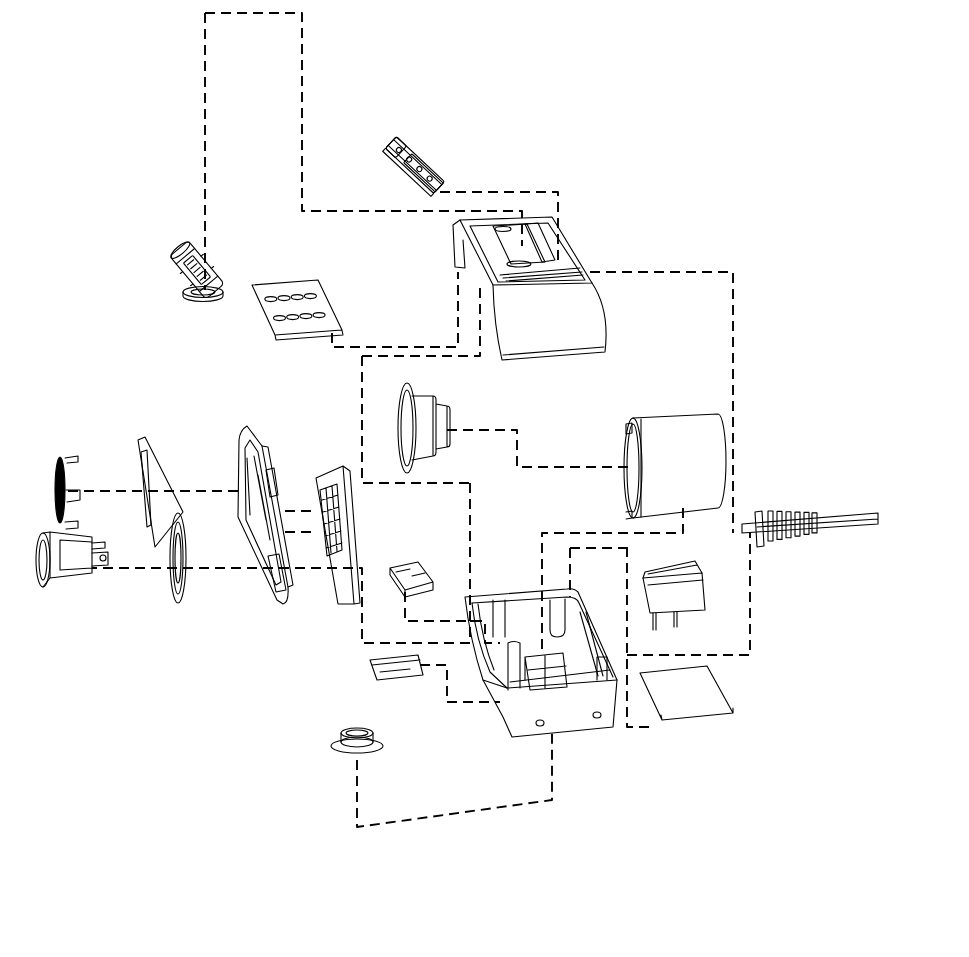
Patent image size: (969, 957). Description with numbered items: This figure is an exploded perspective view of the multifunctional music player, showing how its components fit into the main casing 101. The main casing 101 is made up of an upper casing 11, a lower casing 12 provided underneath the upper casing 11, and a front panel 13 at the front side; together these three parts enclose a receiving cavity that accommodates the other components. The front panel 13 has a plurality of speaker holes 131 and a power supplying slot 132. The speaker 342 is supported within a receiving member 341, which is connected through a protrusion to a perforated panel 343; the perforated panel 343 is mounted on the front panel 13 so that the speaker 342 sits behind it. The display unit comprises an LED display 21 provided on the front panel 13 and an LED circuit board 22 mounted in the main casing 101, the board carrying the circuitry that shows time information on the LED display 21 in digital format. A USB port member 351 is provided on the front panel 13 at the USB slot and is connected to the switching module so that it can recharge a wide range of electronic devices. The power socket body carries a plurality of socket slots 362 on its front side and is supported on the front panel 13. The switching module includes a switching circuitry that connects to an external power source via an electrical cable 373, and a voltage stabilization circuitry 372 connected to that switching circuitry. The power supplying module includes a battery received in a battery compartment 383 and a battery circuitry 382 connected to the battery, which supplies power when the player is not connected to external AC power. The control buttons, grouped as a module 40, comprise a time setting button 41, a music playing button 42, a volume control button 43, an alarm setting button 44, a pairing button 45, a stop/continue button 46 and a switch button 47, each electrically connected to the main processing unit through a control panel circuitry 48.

The main casing 101 is at (633, 243).
The upper casing 11 is at (577, 255).
The lower casing 12 is at (571, 717).
The front panel 13 is at (237, 428).
The speaker holes 131 is at (242, 480).
The power supplying slot 132 is at (277, 571).
The LED display 21 is at (175, 573).
The LED circuit board 22 is at (340, 580).
The circuit module 40 is at (386, 167).
The time setting button 41 is at (400, 145).
The music playing button 42 is at (413, 150).
The volume control button 43 is at (423, 170).
The alarm setting button 44 is at (183, 247).
The pairing button 45 is at (207, 296).
The stop/continue button 46 is at (185, 268).
The switch button 47 is at (707, 593).
The control panel circuitry 48 is at (288, 287).
The receiving member 341 is at (665, 430).
The speaker 342 is at (448, 418).
The perforated panel 343 is at (60, 455).
The USB port member 351 is at (405, 568).
The socket slots 362 is at (45, 583).
The voltage stabilization circuitry 372 is at (688, 703).
The electrical cable 373 is at (757, 507).
The battery circuitry 382 is at (408, 667).
The battery compartment 383 is at (342, 755).